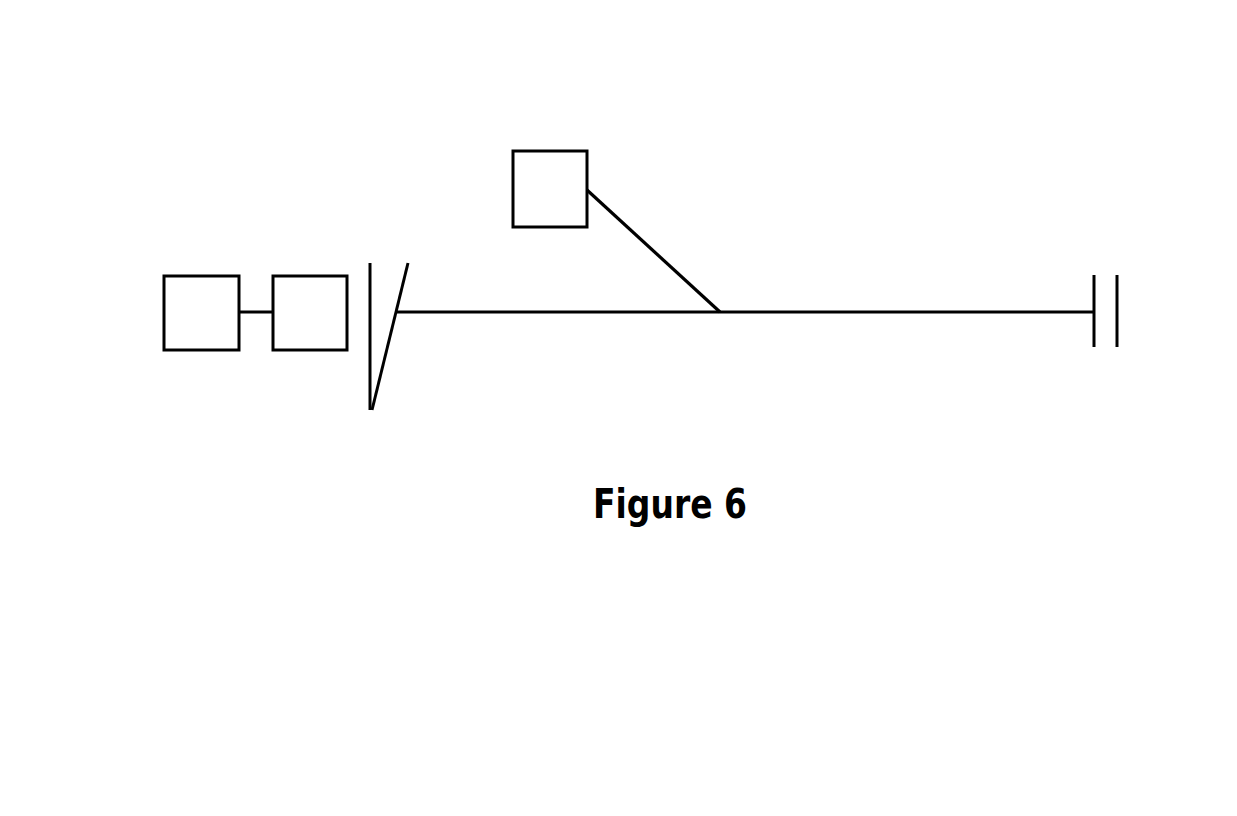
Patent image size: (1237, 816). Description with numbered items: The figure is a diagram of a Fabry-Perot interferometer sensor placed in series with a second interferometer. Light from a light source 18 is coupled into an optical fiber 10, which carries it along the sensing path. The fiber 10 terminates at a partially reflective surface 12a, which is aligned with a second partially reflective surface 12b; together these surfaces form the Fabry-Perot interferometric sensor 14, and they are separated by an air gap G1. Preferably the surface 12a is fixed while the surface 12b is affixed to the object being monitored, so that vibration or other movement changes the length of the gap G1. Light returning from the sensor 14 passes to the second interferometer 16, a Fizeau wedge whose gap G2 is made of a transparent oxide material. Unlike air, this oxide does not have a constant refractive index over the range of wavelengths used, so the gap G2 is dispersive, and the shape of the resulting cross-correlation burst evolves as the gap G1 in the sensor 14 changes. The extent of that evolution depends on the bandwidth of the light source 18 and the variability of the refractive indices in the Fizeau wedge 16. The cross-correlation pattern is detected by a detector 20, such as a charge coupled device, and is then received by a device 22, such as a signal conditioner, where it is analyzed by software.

The optical fiber 10 is at (913, 308).
The partially reflective surface 12a is at (1093, 347).
The partially reflective surface 12b is at (1118, 347).
The Fabry-Perot interferometric sensor 14 is at (1140, 294).
The second interferometer 16 is at (387, 350).
The light source 18 is at (552, 150).
The detector 20 is at (297, 350).
The device 22 is at (202, 277).
The air gap G1 is at (1103, 263).
The gap G2 is at (382, 254).